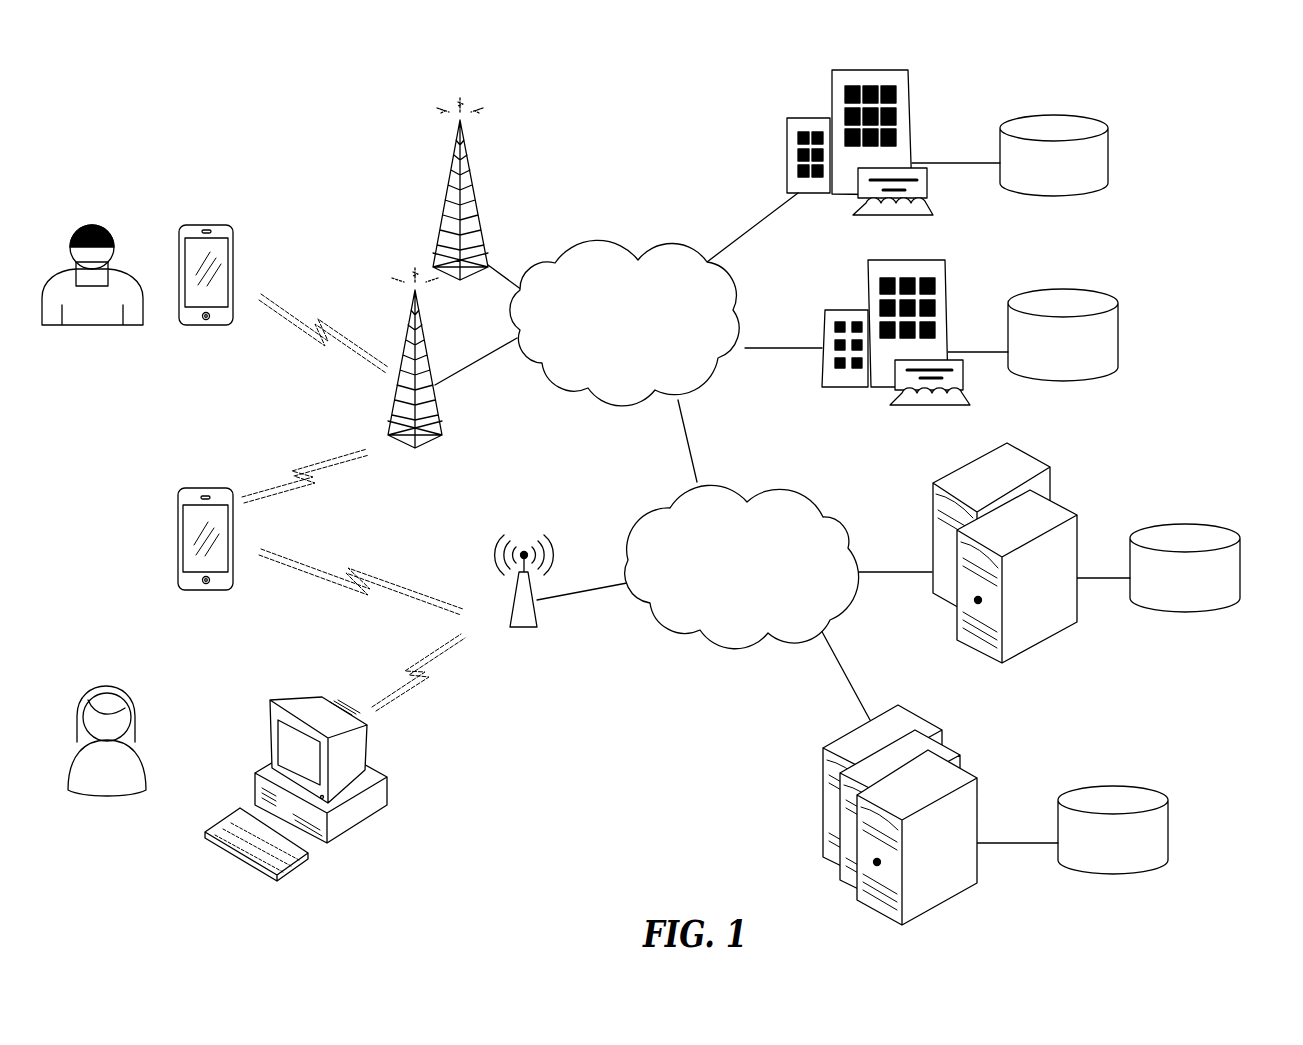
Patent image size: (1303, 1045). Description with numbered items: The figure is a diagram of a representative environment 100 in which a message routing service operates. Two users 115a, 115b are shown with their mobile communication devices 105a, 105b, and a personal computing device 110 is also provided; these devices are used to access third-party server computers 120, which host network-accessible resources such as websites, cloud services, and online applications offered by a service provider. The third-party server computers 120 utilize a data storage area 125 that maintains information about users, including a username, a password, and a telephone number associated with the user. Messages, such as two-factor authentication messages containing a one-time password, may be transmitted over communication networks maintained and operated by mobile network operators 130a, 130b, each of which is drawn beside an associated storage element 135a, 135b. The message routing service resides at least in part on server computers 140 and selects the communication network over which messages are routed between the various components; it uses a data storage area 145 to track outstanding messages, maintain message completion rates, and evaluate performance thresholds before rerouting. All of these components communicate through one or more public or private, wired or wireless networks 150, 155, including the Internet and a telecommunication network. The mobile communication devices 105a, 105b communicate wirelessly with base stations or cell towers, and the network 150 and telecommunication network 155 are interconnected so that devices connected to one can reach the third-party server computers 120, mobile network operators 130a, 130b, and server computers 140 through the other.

The environment 100 is at (198, 127).
The mobile communication device 105a is at (205, 487).
The mobile communication device 105b is at (208, 223).
The personal computing device 110 is at (392, 784).
The user 115a is at (92, 678).
The user 115b is at (87, 221).
The third-party server computers 120 is at (945, 741).
The data storage area 125 is at (1145, 784).
The mobile network operator 130a is at (912, 77).
The mobile network operator 130b is at (950, 264).
The database 135a is at (1080, 113).
The database 135b is at (1090, 288).
The server computers 140 is at (1020, 449).
The data storage area 145 is at (1240, 572).
The network 150 is at (748, 650).
The telecommunication network 155 is at (574, 247).